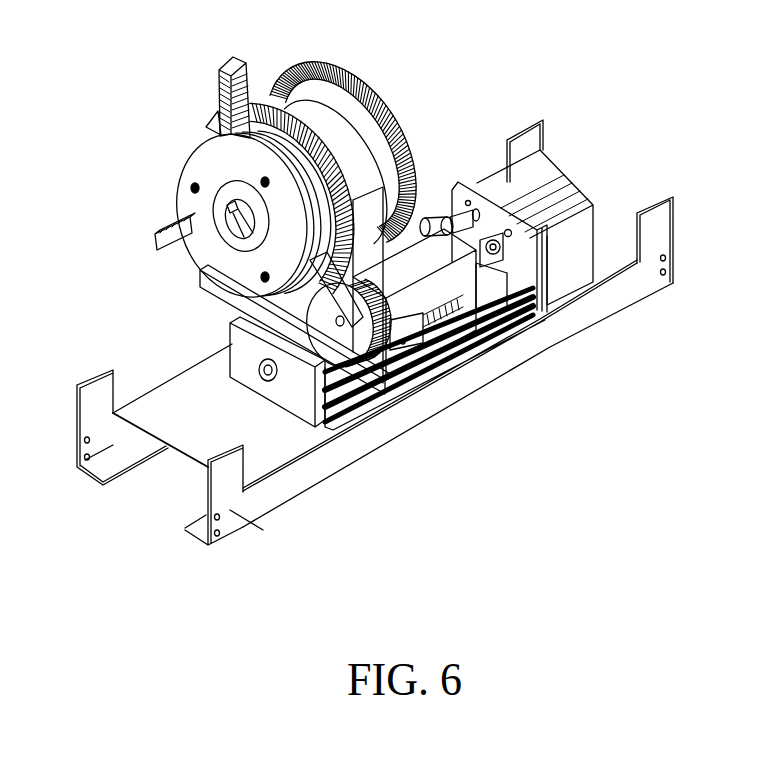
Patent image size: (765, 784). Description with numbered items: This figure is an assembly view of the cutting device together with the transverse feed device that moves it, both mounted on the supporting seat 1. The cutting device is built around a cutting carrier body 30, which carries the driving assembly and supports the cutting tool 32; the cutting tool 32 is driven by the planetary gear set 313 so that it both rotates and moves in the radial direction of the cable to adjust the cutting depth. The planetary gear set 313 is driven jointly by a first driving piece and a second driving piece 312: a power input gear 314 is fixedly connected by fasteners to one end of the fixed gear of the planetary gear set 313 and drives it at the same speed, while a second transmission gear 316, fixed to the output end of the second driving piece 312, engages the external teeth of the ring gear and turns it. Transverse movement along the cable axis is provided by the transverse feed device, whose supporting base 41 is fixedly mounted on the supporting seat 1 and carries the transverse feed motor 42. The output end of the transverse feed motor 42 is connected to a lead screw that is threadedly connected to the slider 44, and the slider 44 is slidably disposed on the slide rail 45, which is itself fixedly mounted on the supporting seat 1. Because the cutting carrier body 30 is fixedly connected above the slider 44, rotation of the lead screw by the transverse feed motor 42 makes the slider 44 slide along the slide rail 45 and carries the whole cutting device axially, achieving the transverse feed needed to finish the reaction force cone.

The supporting seat 1 is at (240, 513).
The cutting carrier body 30 is at (360, 163).
The cutting tool 32 is at (156, 250).
The supporting base 41 is at (353, 427).
The transverse feed motor 42 is at (580, 235).
The slider 44 is at (428, 352).
The slide rail 45 is at (463, 338).
The second driving piece 312 is at (418, 257).
The planetary gear set 313 is at (253, 133).
The power input gear 314 is at (305, 80).
The second transmission gear 316 is at (395, 358).